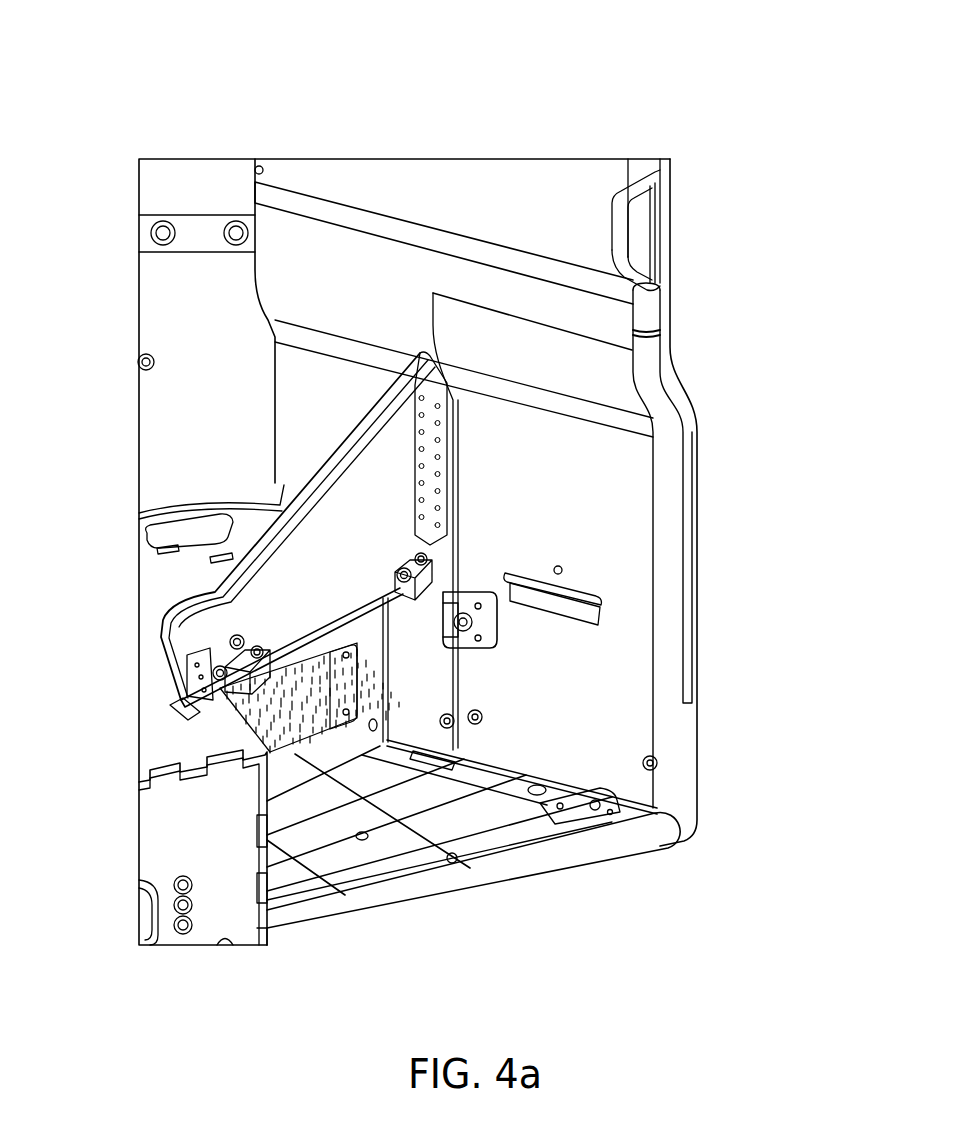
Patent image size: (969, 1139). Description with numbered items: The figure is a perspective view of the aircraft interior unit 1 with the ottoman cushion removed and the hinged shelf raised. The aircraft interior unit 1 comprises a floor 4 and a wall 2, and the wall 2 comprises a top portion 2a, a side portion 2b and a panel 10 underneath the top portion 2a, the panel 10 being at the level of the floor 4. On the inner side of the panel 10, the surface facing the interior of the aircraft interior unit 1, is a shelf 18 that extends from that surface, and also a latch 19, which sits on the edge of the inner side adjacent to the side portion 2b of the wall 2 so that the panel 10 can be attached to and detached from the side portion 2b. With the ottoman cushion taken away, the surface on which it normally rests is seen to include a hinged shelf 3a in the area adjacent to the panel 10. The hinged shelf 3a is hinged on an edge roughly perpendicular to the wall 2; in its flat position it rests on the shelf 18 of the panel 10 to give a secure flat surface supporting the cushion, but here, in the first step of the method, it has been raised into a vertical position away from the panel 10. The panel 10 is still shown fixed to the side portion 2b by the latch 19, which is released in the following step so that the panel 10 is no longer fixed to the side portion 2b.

The aircraft interior unit 1 is at (117, 90).
The wall 2 is at (706, 178).
The top portion 2a is at (558, 195).
The side portion 2b is at (323, 385).
The hinged shelf 3a is at (317, 555).
The floor 4 is at (348, 872).
The panel 10 is at (623, 670).
The shelf 18 is at (563, 593).
The latch 19 is at (497, 647).